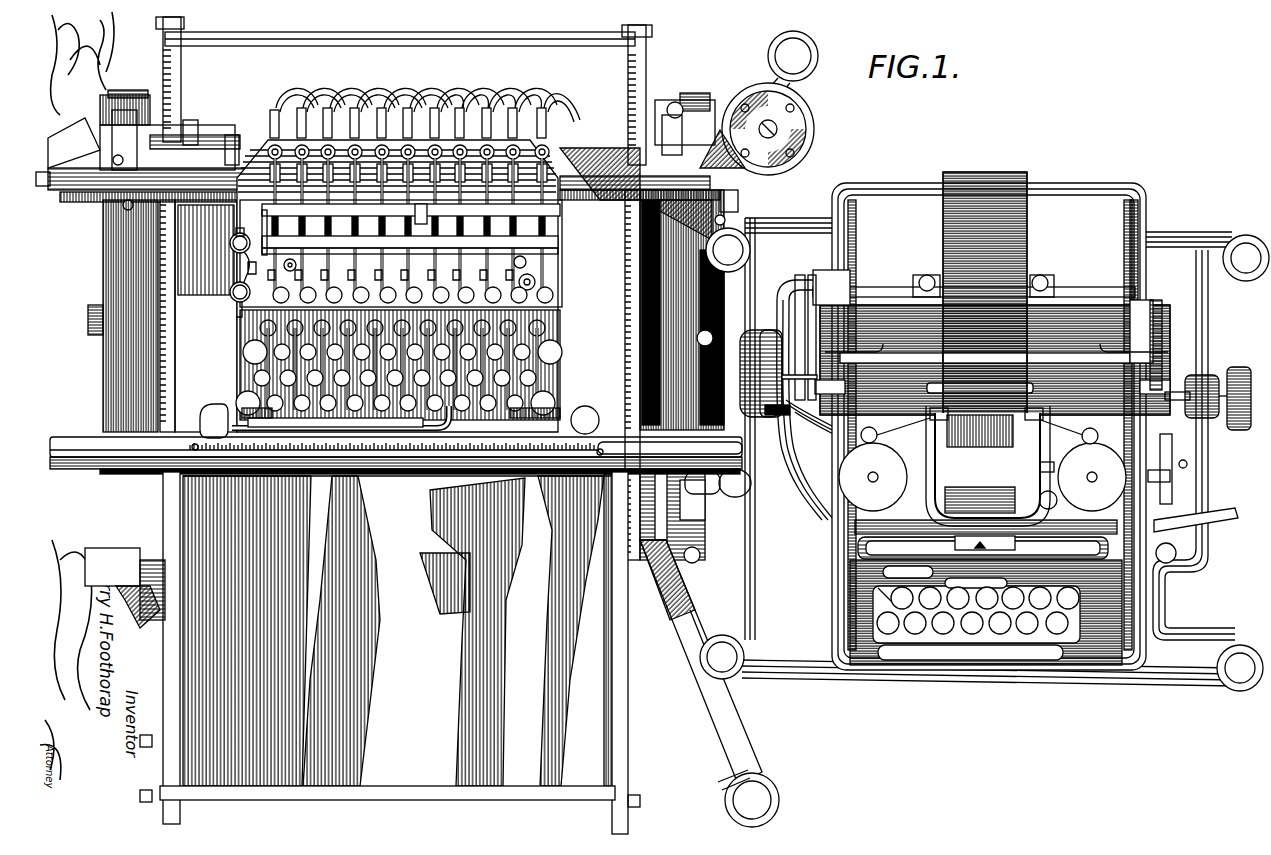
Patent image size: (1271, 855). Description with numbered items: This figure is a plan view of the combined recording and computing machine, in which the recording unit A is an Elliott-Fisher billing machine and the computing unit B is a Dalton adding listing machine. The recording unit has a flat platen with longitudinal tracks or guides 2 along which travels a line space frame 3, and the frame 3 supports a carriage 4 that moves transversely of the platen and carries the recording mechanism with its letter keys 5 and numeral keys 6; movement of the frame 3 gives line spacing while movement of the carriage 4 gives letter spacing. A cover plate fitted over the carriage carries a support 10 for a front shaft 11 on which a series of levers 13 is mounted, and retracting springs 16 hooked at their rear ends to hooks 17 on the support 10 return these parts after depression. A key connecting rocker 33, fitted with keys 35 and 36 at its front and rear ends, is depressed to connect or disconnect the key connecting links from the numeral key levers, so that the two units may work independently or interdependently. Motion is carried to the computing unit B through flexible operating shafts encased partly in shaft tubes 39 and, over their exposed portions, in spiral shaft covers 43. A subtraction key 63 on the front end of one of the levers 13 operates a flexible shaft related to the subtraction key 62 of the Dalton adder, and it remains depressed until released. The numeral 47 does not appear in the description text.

The longitudinal tracks or guides 2 is at (162, 652).
The line space frame 3 is at (72, 432).
The carriage 4 is at (232, 285).
The letter keys 5 is at (262, 372).
The numeral keys 6 is at (265, 326).
The support 10 is at (270, 118).
The front shaft 11 is at (558, 262).
The levers 13 is at (545, 278).
The retracting springs 16 is at (562, 242).
The hooks 17 is at (262, 212).
The key connecting rocker 33 is at (232, 260).
The key 35 is at (235, 300).
The key 36 is at (232, 240).
The shaft tubes 39 is at (384, 98).
The spiral shaft cover 43 is at (512, 98).
The typewriter keys 47 is at (972, 625).
The subtraction key 62 is at (1060, 630).
The subtraction key 63 is at (545, 296).
The recording unit A is at (709, 683).
The computing unit B is at (984, 431).